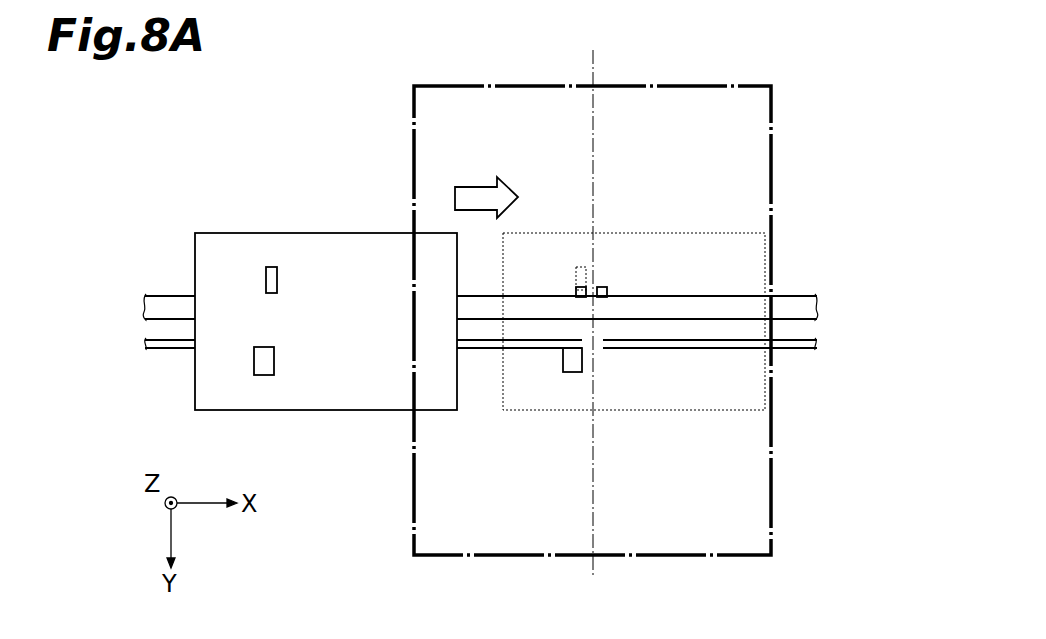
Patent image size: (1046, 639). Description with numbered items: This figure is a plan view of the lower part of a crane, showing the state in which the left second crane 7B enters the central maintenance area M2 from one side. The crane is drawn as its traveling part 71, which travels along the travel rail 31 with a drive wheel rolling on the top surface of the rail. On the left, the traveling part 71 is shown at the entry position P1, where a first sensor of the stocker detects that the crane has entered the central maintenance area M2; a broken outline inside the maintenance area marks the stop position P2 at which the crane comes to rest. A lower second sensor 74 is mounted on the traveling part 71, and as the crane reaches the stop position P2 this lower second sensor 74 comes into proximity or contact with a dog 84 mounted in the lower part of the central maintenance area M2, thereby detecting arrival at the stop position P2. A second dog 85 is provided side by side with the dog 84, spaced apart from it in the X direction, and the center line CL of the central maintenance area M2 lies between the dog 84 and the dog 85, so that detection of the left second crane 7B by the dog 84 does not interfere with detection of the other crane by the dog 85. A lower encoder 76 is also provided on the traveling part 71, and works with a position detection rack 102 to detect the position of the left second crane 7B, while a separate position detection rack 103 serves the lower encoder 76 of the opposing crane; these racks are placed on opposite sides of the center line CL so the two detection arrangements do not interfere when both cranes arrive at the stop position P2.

The left second crane 7B is at (246, 233).
The travel rail 31 is at (727, 306).
The traveling part 71 is at (361, 414).
The lower second sensor 74 is at (278, 278).
The lower encoder 76 is at (274, 357).
The dog 84 is at (577, 291).
The dog 85 is at (607, 291).
The position detection rack 102 is at (170, 350).
The position detection rack 103 is at (790, 352).
The entry position P1 is at (195, 233).
The stop position P2 is at (521, 416).
The central maintenance area M2 is at (772, 105).
The center line CL is at (588, 68).